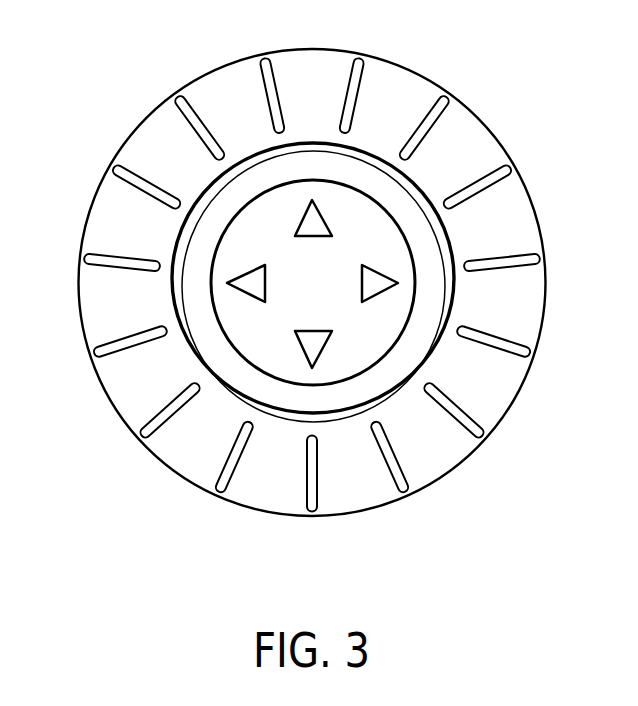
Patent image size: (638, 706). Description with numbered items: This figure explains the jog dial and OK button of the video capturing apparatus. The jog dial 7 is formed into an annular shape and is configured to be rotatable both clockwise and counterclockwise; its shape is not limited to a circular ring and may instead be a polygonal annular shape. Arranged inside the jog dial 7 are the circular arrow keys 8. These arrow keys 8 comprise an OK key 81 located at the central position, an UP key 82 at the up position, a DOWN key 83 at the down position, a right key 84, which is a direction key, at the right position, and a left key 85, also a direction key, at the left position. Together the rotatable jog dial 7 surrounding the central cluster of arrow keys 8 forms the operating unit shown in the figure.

The jog dial 7 is at (518, 222).
The arrow keys 8 is at (240, 238).
The OK key 81 is at (337, 260).
The UP key 82 is at (313, 218).
The DOWN key 83 is at (312, 340).
The right key 84 is at (377, 280).
The left key 85 is at (253, 285).